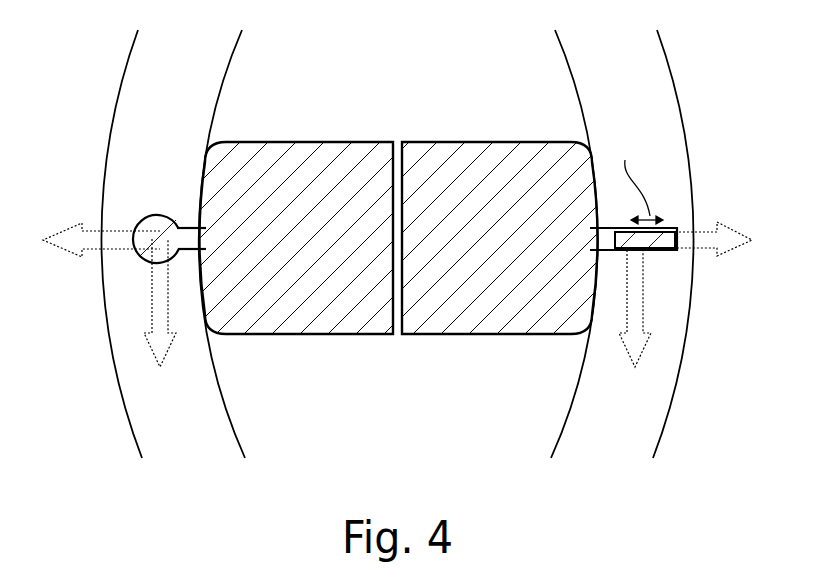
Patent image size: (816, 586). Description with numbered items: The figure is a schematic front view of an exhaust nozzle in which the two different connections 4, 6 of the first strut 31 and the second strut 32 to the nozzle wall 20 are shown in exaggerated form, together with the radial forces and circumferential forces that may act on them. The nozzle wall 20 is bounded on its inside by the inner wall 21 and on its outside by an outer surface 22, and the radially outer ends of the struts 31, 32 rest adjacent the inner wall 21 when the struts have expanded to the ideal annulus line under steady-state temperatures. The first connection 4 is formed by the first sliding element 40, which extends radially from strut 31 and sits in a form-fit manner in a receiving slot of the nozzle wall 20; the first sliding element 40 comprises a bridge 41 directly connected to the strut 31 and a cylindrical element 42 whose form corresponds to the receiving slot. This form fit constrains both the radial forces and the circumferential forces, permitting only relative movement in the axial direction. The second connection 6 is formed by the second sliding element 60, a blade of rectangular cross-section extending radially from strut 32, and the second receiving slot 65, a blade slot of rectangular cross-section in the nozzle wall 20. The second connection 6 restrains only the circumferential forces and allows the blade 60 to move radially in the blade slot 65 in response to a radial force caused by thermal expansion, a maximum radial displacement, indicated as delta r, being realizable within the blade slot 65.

The first connection 4 is at (115, 254).
The second connection 6 is at (683, 254).
The nozzle wall 20 is at (433, 253).
The inner wall 21 is at (556, 440).
The outer surface of ring 22 is at (657, 438).
The strut 31 is at (304, 334).
The strut 32 is at (470, 334).
The first sliding element 40 is at (172, 215).
The bridge 41 is at (190, 252).
The cylindrical element 42 is at (163, 216).
The second sliding element 60 is at (648, 252).
The second receiving slot 65 is at (667, 251).